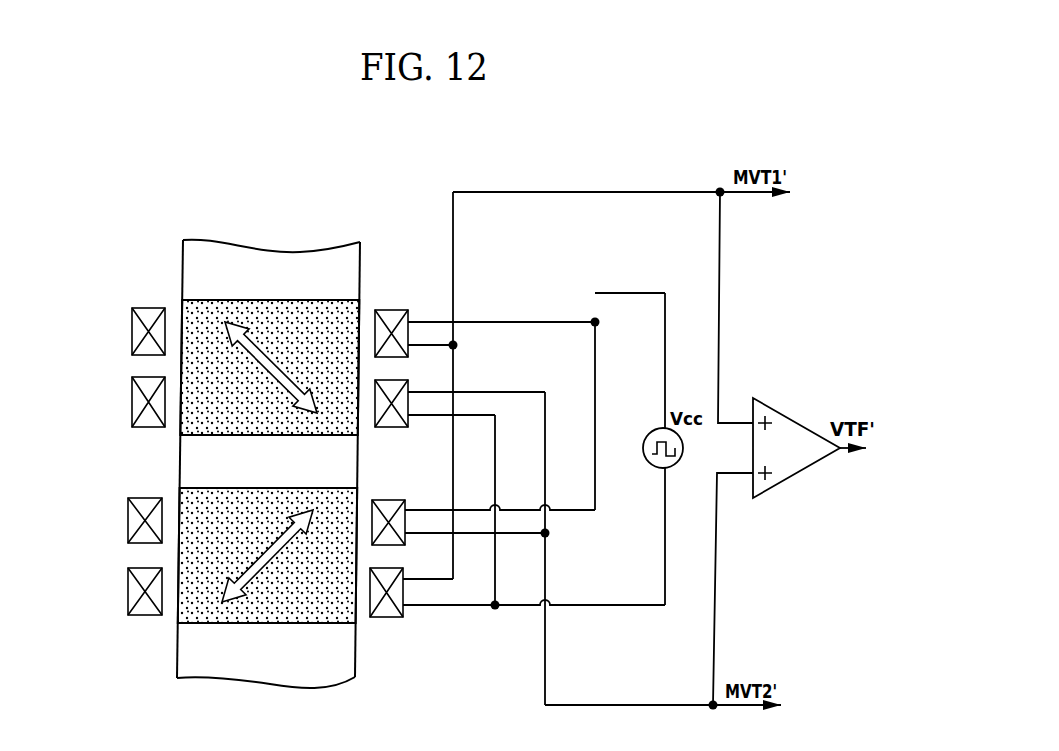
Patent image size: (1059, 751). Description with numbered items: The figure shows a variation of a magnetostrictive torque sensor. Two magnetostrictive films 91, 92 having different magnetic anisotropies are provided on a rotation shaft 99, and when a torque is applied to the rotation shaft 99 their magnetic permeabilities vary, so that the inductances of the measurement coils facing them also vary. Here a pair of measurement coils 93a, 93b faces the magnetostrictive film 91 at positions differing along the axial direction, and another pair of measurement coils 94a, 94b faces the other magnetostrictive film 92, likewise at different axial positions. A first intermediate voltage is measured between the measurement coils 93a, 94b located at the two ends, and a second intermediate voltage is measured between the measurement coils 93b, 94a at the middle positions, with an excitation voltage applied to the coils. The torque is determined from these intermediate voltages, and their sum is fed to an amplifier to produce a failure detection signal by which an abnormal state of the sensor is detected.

The magnetostrictive film 91 is at (212, 312).
The magnetostrictive film 92 is at (205, 605).
The measurement coil 93a is at (138, 328).
The measurement coil 93b is at (138, 400).
The measurement coil 94a is at (136, 520).
The measurement coil 94b is at (136, 593).
The rotation shaft 99 is at (180, 672).